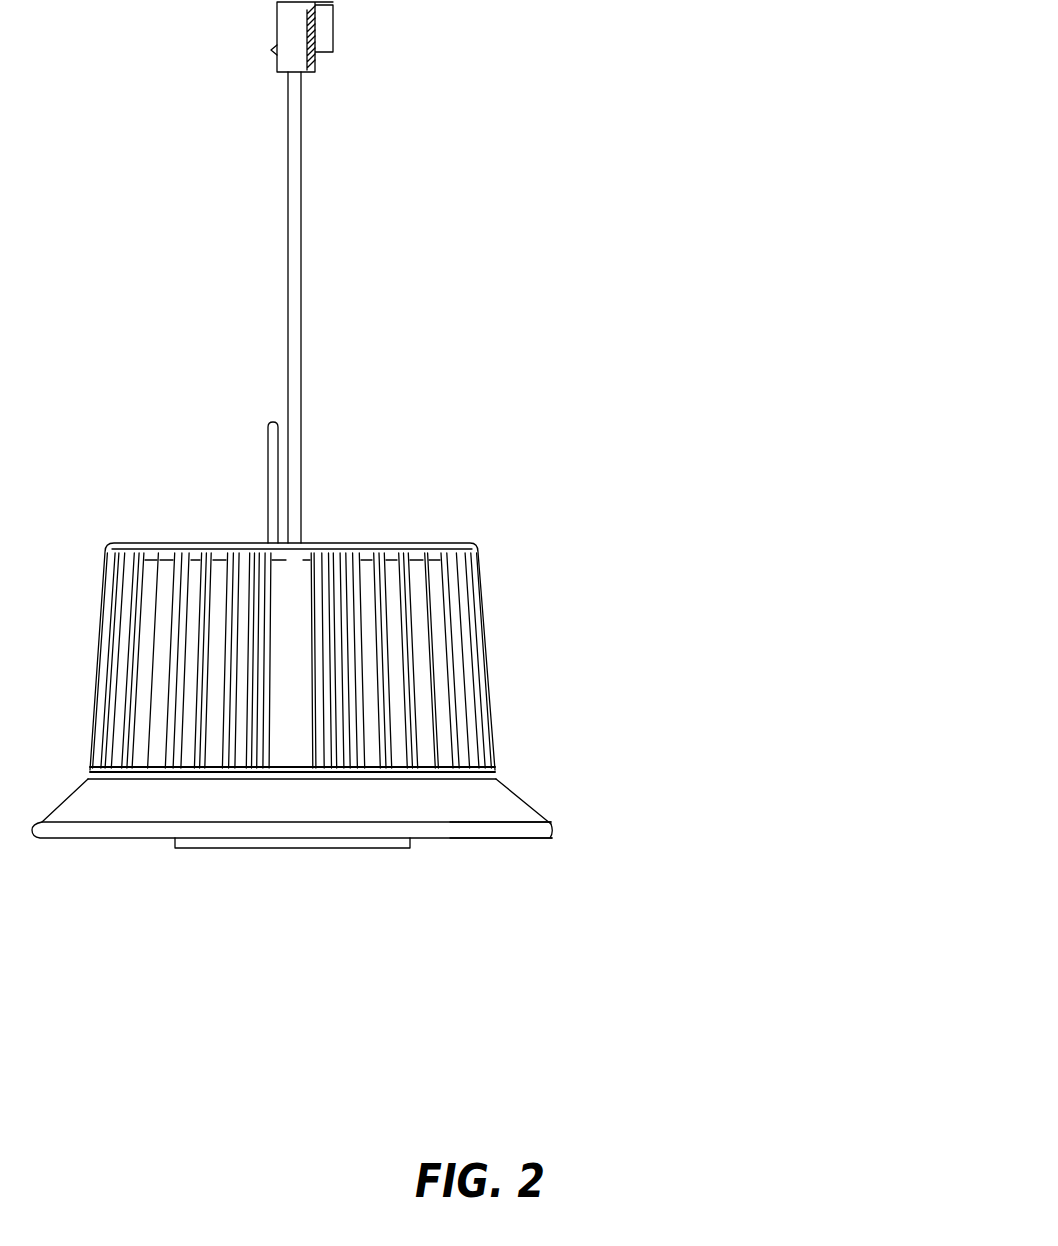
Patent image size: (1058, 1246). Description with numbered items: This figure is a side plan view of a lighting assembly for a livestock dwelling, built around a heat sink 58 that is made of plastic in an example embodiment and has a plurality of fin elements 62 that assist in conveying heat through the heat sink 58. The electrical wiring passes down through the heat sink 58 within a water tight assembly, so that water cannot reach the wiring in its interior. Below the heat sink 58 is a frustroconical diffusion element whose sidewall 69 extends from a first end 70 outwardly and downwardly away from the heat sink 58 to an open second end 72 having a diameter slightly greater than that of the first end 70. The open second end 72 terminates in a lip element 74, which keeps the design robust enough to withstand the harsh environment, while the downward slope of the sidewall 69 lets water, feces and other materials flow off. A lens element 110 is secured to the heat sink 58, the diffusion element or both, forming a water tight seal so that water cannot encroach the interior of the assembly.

The heat sink 58 is at (384, 628).
The fin elements 62 is at (480, 570).
The sidewall 69 is at (512, 817).
The first end 70 is at (495, 768).
The open second end 72 is at (552, 838).
The lip element 74 is at (552, 827).
The lens element 110 is at (347, 848).